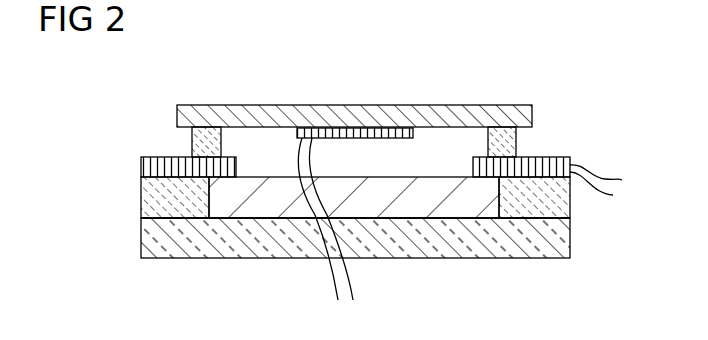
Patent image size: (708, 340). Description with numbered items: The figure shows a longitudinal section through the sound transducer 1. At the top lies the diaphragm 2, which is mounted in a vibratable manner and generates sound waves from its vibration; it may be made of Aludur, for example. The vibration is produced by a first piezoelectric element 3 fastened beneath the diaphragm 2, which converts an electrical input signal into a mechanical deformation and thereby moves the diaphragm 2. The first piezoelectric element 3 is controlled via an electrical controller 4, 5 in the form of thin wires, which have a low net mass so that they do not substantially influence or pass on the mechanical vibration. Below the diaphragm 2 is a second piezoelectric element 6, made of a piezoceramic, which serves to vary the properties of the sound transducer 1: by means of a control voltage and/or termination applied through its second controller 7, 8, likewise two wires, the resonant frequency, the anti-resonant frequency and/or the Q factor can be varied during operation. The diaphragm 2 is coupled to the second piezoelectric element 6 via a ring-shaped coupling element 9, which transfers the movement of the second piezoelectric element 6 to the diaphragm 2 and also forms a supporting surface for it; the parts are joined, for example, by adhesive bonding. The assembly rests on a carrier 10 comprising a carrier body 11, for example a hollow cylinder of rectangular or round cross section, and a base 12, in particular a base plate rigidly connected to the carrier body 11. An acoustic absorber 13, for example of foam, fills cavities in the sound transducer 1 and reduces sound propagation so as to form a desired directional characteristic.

The sound transducer 1 is at (579, 83).
The diaphragm 2 is at (260, 105).
The first piezoelectric element 3 is at (413, 133).
The electrical controller 4 is at (321, 236).
The electrical controller 5 is at (341, 235).
The second piezoelectric element 6 is at (540, 157).
The second controller 7 is at (594, 202).
The second controller 8 is at (597, 165).
The coupling element 9 is at (503, 135).
The carrier 10 is at (80, 178).
The carrier body 11 is at (150, 192).
The base 12 is at (150, 242).
The acoustic absorber 13 is at (441, 220).